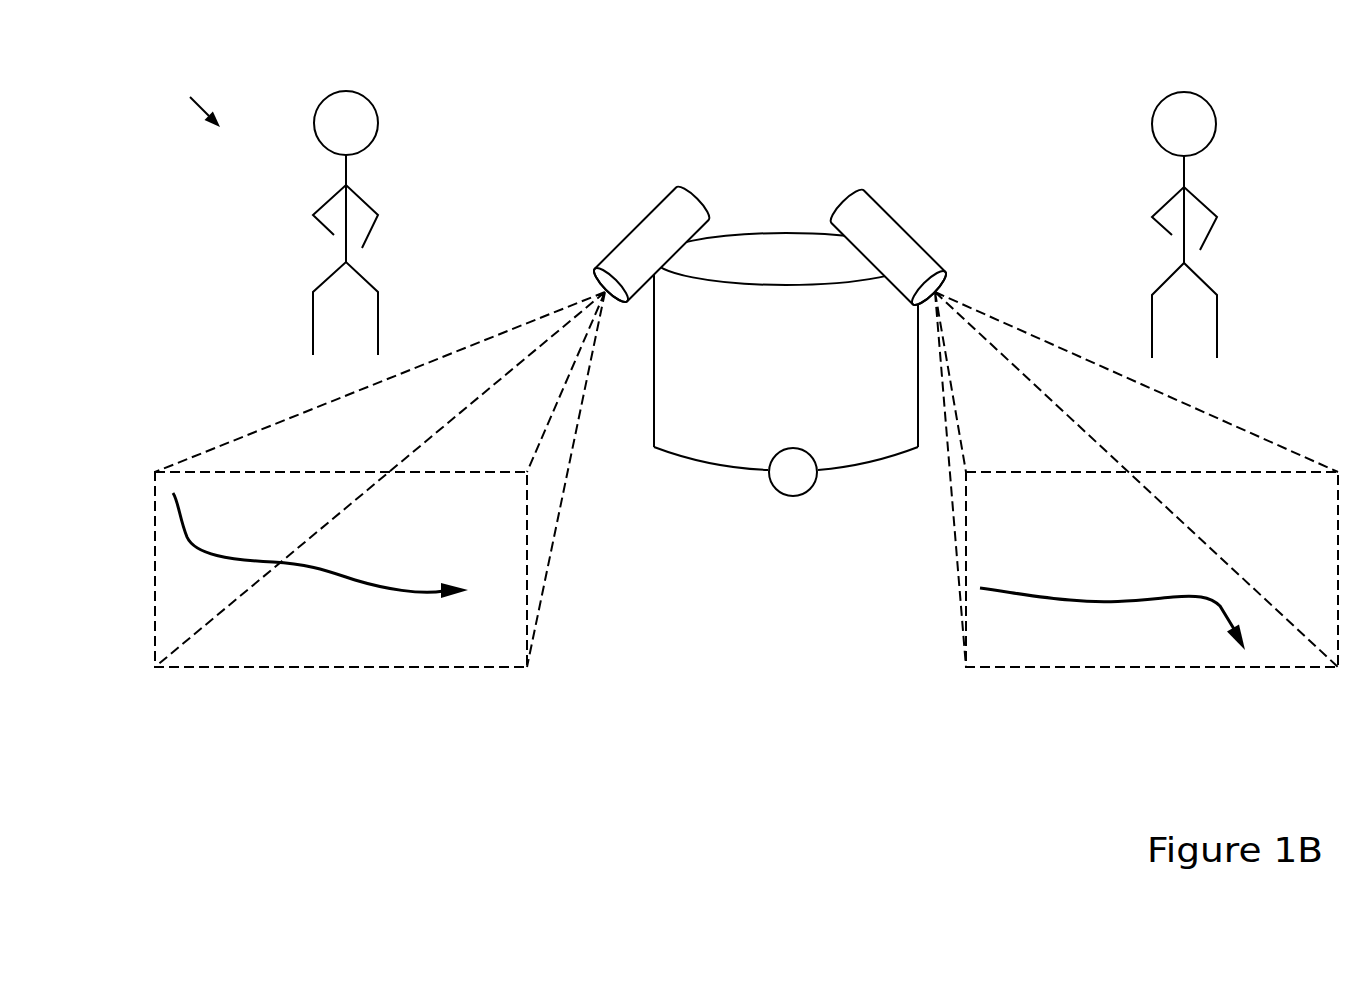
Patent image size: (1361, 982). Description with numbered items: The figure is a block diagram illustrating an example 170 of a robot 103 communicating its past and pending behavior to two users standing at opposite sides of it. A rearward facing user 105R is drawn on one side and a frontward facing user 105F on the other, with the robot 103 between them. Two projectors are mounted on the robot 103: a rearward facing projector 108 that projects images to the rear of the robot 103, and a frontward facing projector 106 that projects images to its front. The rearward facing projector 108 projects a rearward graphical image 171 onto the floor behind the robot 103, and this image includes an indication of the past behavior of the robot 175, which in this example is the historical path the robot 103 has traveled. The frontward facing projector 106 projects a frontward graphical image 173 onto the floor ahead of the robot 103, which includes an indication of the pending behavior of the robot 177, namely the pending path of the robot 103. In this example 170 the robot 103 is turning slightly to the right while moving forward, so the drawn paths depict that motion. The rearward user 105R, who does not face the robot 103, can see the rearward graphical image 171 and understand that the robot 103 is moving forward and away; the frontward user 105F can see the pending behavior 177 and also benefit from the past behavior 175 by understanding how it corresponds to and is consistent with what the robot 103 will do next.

The example 170 is at (189, 100).
The rearward facing user 105R is at (314, 108).
The frontward facing user 105F is at (1152, 108).
The rearward facing projector 108 is at (677, 190).
The frontward facing projector 106 is at (862, 189).
The robot 103 is at (786, 364).
The rearward graphical image 171 is at (527, 557).
The frontward graphical image 173 is at (956, 540).
The past behavior of the robot 175 is at (361, 600).
The pending behavior of the robot 177 is at (1057, 612).